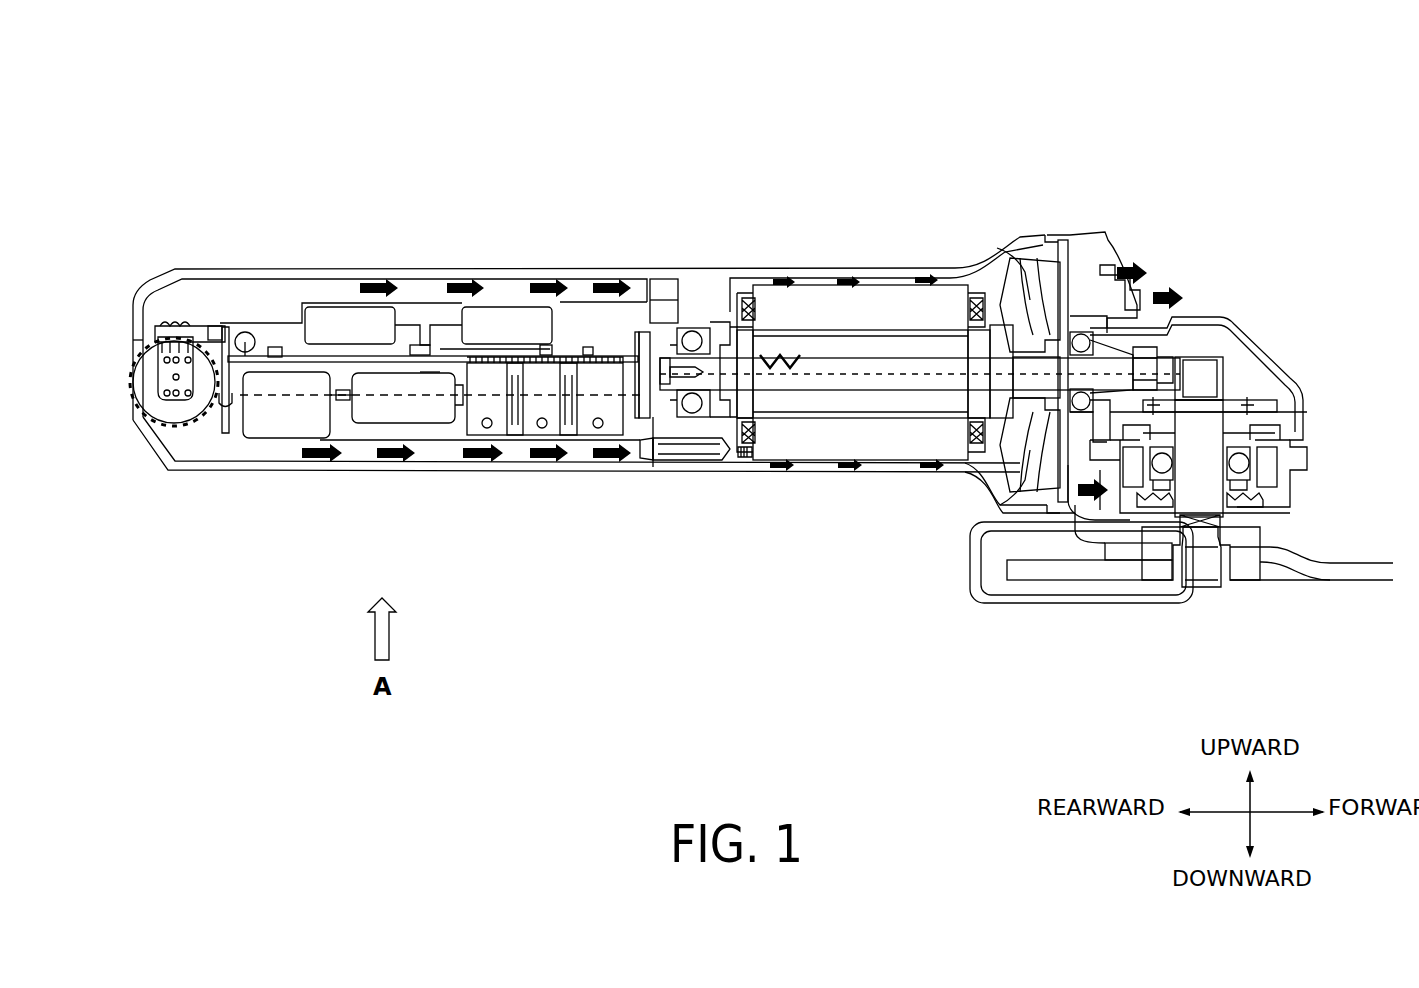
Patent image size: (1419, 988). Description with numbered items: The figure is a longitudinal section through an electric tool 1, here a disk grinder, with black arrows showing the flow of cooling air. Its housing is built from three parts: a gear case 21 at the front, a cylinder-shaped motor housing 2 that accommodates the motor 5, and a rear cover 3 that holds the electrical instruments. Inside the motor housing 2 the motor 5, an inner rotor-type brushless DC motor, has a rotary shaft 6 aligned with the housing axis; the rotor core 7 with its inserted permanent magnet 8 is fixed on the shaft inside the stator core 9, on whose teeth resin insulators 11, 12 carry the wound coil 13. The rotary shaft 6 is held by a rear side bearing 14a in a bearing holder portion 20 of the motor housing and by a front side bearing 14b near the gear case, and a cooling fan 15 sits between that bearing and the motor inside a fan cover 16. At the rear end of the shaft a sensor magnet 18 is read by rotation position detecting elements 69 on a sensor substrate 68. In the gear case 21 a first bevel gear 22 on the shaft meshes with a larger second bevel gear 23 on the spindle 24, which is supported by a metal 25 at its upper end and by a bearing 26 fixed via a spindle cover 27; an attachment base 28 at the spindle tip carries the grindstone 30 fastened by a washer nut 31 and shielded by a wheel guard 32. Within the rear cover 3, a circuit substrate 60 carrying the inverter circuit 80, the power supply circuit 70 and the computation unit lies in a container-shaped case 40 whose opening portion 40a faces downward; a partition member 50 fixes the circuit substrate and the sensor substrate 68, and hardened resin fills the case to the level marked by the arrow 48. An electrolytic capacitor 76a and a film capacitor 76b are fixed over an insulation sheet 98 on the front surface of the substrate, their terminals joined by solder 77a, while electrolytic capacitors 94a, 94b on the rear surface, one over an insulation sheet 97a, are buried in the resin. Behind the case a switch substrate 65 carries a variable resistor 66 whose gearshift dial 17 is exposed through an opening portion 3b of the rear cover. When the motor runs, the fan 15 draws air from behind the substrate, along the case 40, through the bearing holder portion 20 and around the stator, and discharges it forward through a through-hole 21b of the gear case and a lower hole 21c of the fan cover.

The electric tool 1 is at (1236, 142).
The motor housing 2 is at (842, 272).
The rear cover 3 is at (430, 270).
The opening portion 3b is at (132, 338).
The motor 5 is at (950, 540).
The rotary shaft 6 is at (843, 372).
The rotor core 7 is at (887, 408).
The permanent magnet 8 is at (805, 405).
The stator core 9 is at (920, 448).
The insulator 11 is at (972, 445).
The insulator 12 is at (765, 448).
The coil 13 is at (750, 458).
The rear side bearing 14a is at (690, 330).
The front side bearing 14b is at (1080, 320).
The cooling fan 15 is at (1028, 270).
The fan cover 16 is at (1065, 270).
The gearshift dial 17 is at (134, 402).
The sensor magnet 18 is at (667, 342).
The bearing holder portion 20 is at (710, 300).
The gear case 21 is at (1280, 378).
The through-hole 21b is at (1128, 298).
The hole 21c is at (1100, 512).
The first bevel gear 22 is at (1130, 350).
The second bevel gear 23 is at (1280, 412).
The spindle 24 is at (1245, 433).
The metal 25 is at (1200, 370).
The bearing 26 is at (1255, 470).
The spindle cover 27 is at (1297, 452).
The attachment base 28 is at (1255, 535).
The grindstone 30 is at (1365, 572).
The washer nut 31 is at (1250, 582).
The wheel guard 32 is at (1030, 605).
The case 40 is at (562, 300).
The opening portion 40a is at (435, 446).
The resin 48 is at (440, 400).
The partition member 50 is at (640, 395).
The circuit substrate 60 is at (290, 355).
The switch substrate 65 is at (160, 335).
The variable resistor 66 is at (181, 402).
The sensor substrate 68 is at (646, 330).
The rotation position detecting element 69 is at (673, 465).
The power supply circuit 70 is at (293, 444).
The electrolytic capacitor 76a is at (408, 410).
The film capacitor 76b is at (275, 418).
The solder 77a is at (348, 422).
The inverter circuit 80 is at (524, 447).
The electrolytic capacitor 94a is at (502, 318).
The electrolytic capacitor 94b is at (357, 318).
The insulation sheet 97a is at (530, 330).
The insulation sheet 98 is at (245, 440).